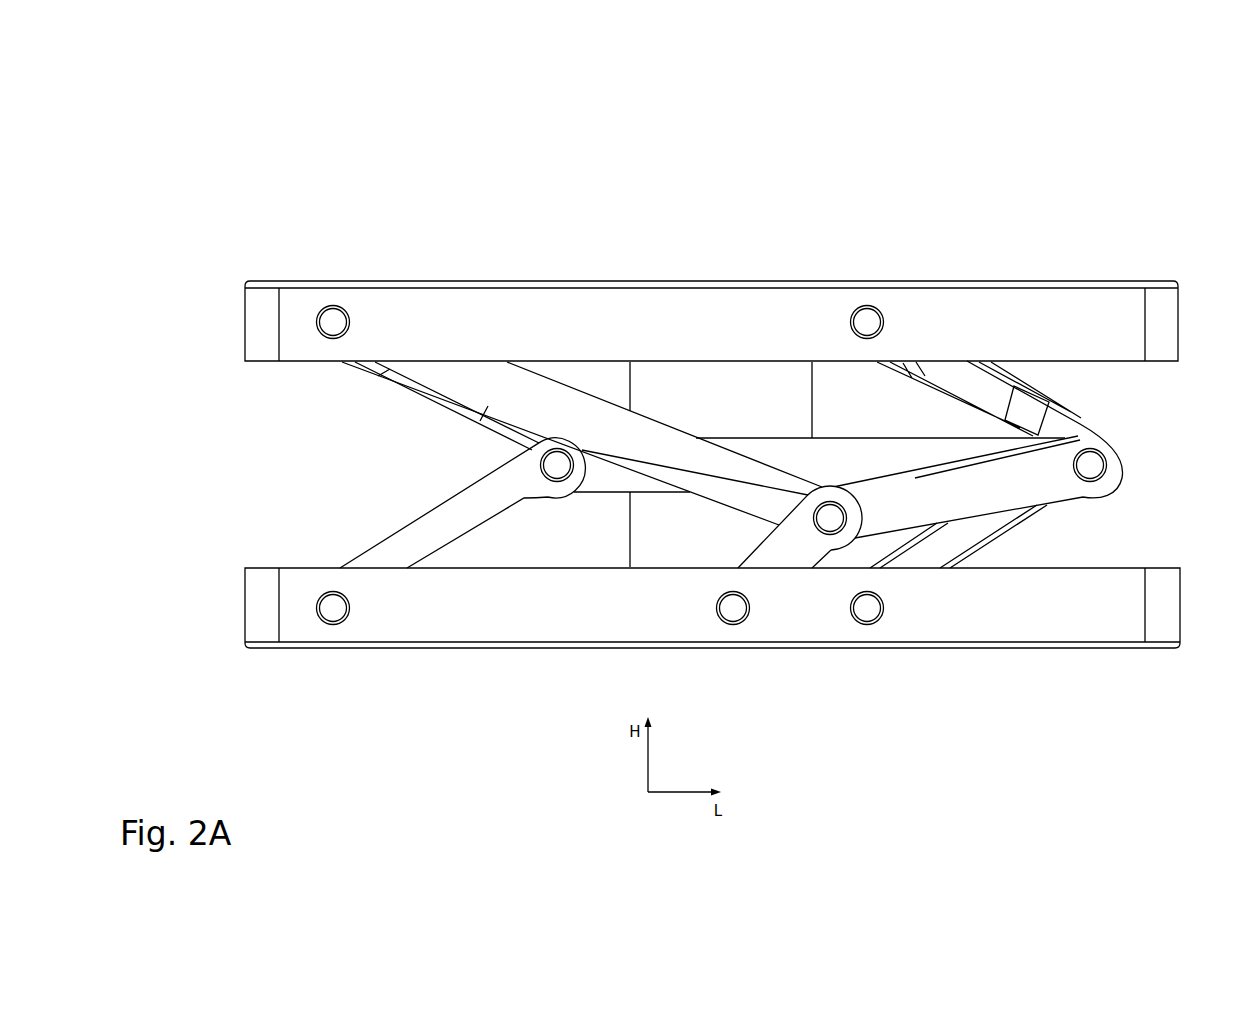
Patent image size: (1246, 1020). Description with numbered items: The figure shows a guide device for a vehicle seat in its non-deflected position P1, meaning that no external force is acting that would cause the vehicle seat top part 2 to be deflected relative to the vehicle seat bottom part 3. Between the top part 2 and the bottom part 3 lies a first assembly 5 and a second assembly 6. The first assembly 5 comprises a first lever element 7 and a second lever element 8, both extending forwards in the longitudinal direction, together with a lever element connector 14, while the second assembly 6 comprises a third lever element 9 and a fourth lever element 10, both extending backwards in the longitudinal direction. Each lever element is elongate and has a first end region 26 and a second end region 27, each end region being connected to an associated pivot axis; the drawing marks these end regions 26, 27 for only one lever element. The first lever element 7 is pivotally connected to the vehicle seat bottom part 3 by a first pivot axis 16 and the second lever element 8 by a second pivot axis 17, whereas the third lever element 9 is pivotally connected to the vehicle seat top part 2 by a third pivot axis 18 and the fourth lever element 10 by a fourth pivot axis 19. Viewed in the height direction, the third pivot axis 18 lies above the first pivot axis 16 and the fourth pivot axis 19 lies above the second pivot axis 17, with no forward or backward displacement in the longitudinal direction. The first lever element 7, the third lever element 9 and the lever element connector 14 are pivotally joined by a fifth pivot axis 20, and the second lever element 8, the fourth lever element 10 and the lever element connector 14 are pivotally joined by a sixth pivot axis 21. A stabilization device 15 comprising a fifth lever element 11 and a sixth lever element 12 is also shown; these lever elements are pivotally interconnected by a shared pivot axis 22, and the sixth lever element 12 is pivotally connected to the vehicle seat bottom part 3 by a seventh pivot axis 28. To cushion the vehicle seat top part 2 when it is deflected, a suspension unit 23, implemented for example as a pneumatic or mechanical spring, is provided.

The non-deflected position P1 is at (1146, 135).
The vehicle seat top part 2 is at (752, 305).
The vehicle seat bottom part 3 is at (1087, 620).
The first assembly 5 is at (1152, 538).
The second assembly 6 is at (1152, 419).
The first lever element 7 is at (403, 540).
The second lever element 8 is at (971, 549).
The third lever element 9 is at (517, 436).
The fourth lever element 10 is at (1021, 393).
The fifth lever element 11 is at (575, 385).
The sixth lever element 12 is at (776, 556).
The lever element connector 14 is at (612, 478).
The stabilization device 15 is at (716, 536).
The first pivot axis 16 is at (334, 606).
The second pivot axis 17 is at (866, 606).
The third pivot axis 18 is at (331, 321).
The fourth pivot axis 19 is at (866, 322).
The fifth pivot axis 20 is at (556, 466).
The sixth pivot axis 21 is at (1092, 468).
The shared pivot axis 22 is at (828, 522).
The suspension unit 23 is at (683, 373).
The first end region 26 is at (297, 542).
The second end region 27 is at (546, 522).
The seventh pivot axis 28 is at (733, 608).